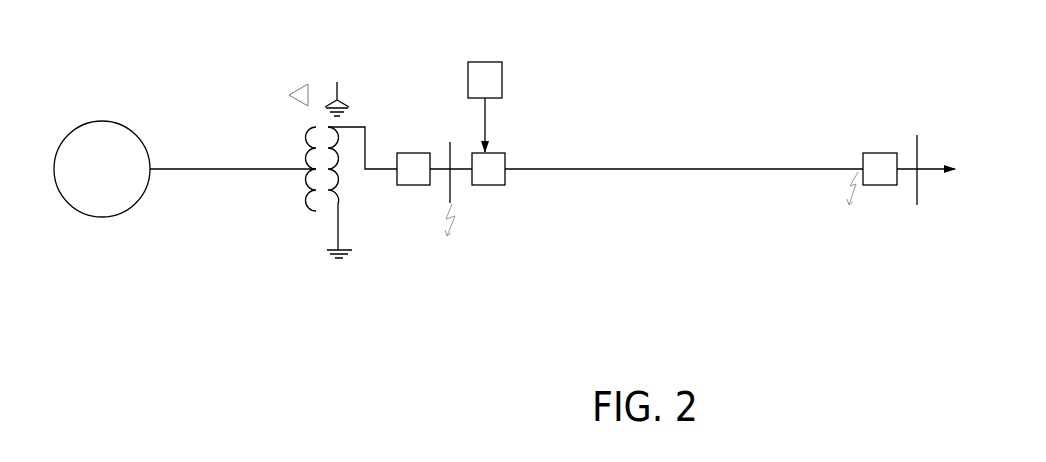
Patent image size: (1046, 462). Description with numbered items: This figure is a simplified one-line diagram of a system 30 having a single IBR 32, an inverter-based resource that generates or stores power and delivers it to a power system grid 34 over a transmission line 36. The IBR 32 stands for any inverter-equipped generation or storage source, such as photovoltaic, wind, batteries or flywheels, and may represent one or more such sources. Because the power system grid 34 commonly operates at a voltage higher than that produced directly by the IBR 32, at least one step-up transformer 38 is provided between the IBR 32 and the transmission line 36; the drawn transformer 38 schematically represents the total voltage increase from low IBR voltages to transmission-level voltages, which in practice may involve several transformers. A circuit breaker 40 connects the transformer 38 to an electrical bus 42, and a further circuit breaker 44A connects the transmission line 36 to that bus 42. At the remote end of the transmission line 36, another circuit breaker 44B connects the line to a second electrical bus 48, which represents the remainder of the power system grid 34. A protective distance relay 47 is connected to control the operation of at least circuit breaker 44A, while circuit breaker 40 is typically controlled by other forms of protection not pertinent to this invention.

The system 30 is at (90, 81).
The IBR 32 is at (120, 212).
The power system grid 34 is at (360, 76).
The transmission line 36 is at (640, 170).
The step-up transformer 38 is at (290, 82).
The circuit breaker 40 is at (411, 185).
The electrical bus 42 is at (450, 185).
The circuit breaker 44A is at (500, 185).
The circuit breaker 44B is at (880, 153).
The protective distance relay 47 is at (503, 76).
The electrical bus 48 is at (912, 183).